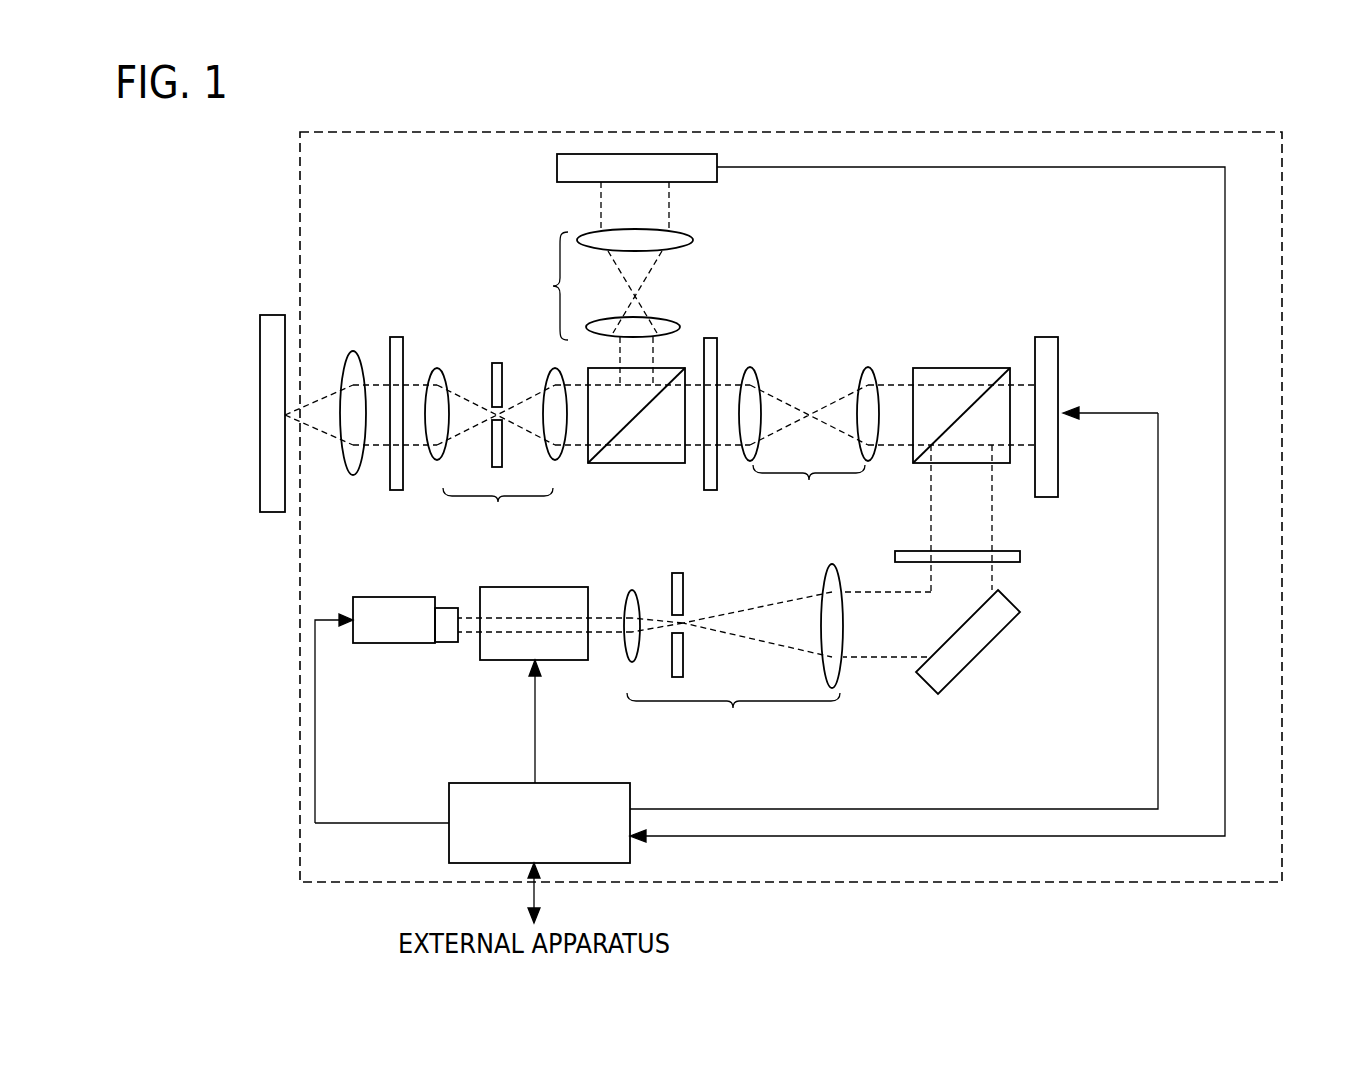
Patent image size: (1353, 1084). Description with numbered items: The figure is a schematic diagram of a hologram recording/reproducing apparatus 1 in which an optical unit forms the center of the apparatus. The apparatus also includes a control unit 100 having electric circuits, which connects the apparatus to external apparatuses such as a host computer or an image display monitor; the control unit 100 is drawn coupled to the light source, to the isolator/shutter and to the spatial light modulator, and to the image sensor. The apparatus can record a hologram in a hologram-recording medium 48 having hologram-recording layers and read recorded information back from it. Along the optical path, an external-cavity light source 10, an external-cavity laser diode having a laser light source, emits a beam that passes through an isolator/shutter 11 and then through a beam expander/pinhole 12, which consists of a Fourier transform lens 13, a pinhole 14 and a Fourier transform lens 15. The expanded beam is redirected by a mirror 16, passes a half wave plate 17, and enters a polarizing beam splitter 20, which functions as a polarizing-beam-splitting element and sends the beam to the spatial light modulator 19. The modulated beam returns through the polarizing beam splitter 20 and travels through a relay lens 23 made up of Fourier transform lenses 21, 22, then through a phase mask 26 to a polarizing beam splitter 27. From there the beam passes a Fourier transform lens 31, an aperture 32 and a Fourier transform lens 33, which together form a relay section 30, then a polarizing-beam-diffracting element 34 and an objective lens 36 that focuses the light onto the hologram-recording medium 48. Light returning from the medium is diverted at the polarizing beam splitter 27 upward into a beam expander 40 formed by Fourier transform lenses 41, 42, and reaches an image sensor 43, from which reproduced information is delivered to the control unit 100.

The hologram recording/reproducing apparatus 1 is at (910, 133).
The external-cavity light source 10 is at (368, 643).
The isolator/shutter 11 is at (532, 587).
The beam expander/pinhole 12 is at (733, 722).
The Fourier transform lens 13 is at (638, 592).
The pinhole 14 is at (683, 582).
The Fourier transform lens 15 is at (836, 565).
The mirror 16 is at (990, 646).
The half wave plate 17 is at (1010, 550).
The spatial light modulator 19 is at (1046, 336).
The polarizing beam splitter 20 is at (955, 367).
The Fourier transform lens 21 is at (872, 368).
The Fourier transform lens 22 is at (757, 368).
The relay lens 23 is at (809, 493).
The phase mask 26 is at (711, 337).
The polarizing beam splitter 27 is at (655, 464).
The relay optical system 30 is at (498, 512).
The Fourier transform lens 31 is at (549, 458).
The aperture 32 is at (497, 362).
The Fourier transform lens 33 is at (445, 455).
The polarizing-beam-diffracting element 34 is at (390, 488).
The objective lens 36 is at (350, 352).
The beam expander 40 is at (553, 286).
The Fourier transform lens 41 is at (672, 318).
The Fourier transform lens 42 is at (693, 238).
The image sensor 43 is at (717, 181).
The hologram-recording medium 48 is at (268, 512).
The control unit 100 is at (548, 783).